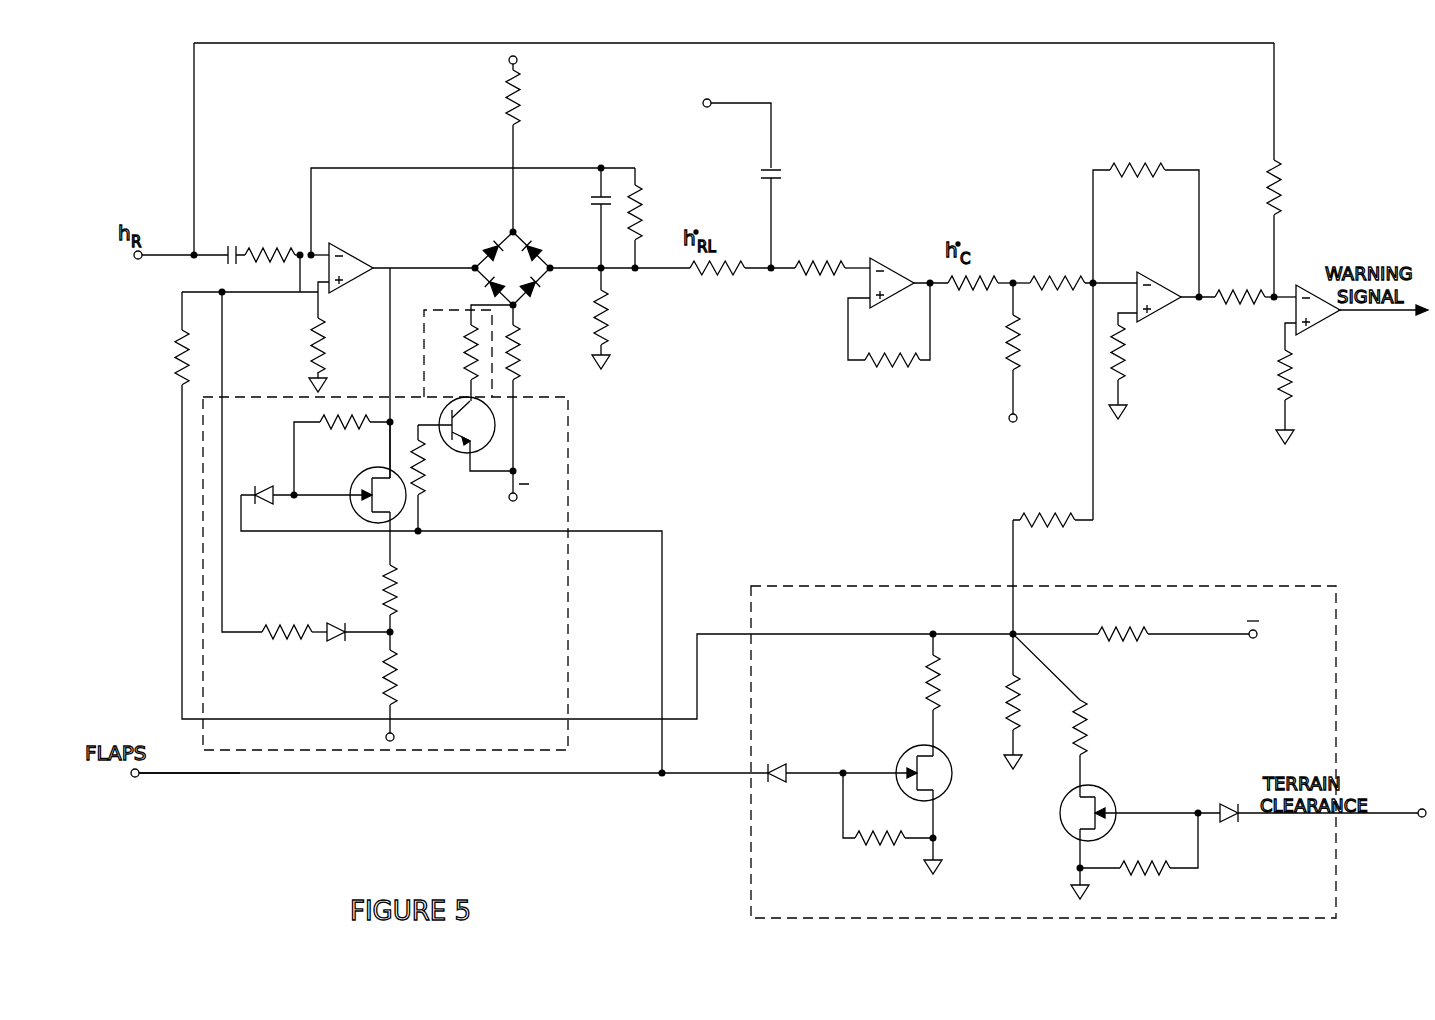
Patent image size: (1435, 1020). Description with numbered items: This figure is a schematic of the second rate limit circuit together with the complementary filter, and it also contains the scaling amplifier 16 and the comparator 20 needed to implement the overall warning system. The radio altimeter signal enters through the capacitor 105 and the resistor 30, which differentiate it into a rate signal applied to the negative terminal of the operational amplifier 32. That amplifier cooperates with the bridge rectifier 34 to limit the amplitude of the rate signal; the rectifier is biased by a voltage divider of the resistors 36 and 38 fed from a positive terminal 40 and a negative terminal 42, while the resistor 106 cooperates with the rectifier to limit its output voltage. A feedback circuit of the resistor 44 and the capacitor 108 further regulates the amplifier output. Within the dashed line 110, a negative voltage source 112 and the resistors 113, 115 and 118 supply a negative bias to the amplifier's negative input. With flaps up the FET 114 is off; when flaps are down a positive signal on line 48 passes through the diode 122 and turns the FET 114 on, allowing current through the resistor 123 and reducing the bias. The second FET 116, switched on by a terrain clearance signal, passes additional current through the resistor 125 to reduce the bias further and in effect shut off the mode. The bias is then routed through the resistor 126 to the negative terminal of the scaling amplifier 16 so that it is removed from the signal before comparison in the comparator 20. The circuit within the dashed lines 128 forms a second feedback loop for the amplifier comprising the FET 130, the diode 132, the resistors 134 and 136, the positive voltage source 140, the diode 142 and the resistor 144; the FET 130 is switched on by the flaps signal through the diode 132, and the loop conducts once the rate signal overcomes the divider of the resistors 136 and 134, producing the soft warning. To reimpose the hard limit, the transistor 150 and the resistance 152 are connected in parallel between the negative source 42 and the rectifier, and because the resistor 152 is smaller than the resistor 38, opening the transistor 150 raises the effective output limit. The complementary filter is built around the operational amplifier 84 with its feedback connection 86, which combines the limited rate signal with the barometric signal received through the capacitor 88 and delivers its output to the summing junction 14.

The summing junction 14 is at (1013, 283).
The scaling amplifier 16 is at (1159, 312).
The comparator 20 is at (1331, 322).
The resistor 30 is at (274, 249).
The operational amplifier 32 is at (348, 255).
The bridge rectifier 34 is at (527, 281).
The resistor 36 is at (520, 107).
The resistor 38 is at (517, 340).
The terminal 40 is at (518, 61).
The terminal 42 is at (526, 493).
The resistor 44 is at (642, 208).
The line 48 is at (225, 773).
The operational amplifier 84 is at (891, 263).
The feedback connection 86 is at (905, 373).
The capacitor 88 is at (779, 170).
The capacitor 105 is at (224, 247).
The resistor 106 is at (607, 302).
The capacitor 108 is at (595, 206).
The circuit 110 is at (1250, 585).
The negative voltage source 112 is at (1257, 634).
The resistor 113 is at (1138, 632).
The FET 114 is at (952, 789).
The resistor 115 is at (1006, 690).
The second FET 116 is at (1107, 798).
The resistor 118 is at (174, 353).
The diode 122 is at (785, 766).
The resistor 123 is at (925, 667).
The resistor 125 is at (1086, 718).
The resistor 126 is at (1052, 528).
The circuit 128 is at (568, 440).
The FET 130 is at (357, 470).
The diode 132 is at (264, 484).
The resistor 134 is at (394, 585).
The resistor 136 is at (394, 673).
The positive voltage source 140 is at (395, 737).
The diode 142 is at (335, 647).
The resistor 144 is at (280, 629).
The transistor 150 is at (455, 391).
The resistance 152 is at (460, 351).